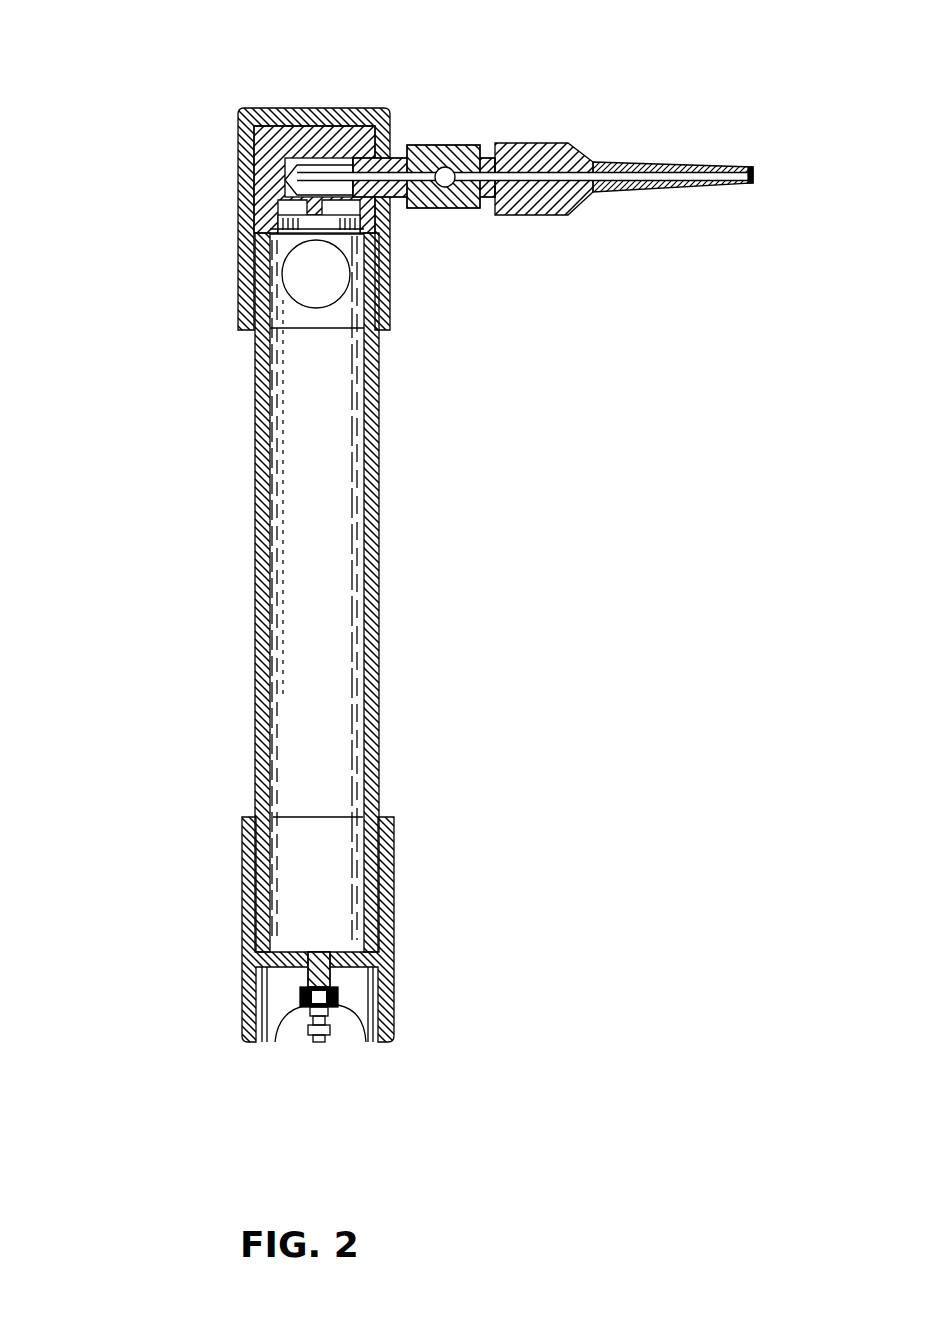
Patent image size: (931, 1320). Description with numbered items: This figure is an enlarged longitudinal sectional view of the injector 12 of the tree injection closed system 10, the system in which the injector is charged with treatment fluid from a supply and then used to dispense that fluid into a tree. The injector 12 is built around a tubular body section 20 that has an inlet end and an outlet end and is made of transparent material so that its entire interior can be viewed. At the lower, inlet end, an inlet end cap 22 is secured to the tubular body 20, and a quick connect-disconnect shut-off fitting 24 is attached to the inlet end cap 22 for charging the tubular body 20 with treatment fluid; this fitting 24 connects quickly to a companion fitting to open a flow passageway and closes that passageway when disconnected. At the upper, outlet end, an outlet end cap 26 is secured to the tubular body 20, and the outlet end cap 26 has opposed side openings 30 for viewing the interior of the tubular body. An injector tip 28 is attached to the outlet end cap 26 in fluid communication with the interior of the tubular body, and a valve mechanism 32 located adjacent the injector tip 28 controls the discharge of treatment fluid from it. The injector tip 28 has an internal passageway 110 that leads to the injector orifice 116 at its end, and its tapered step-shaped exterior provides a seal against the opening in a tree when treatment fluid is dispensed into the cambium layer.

The tree injection closed system 10 is at (461, 598).
The injector 12 is at (396, 623).
The tubular body section 20 is at (255, 547).
The inlet end cap 22 is at (394, 885).
The quick connect-disconnect shut-off fitting 24 is at (307, 1007).
The outlet end cap 26 is at (238, 259).
The injector tip 28 is at (566, 141).
The opposed side openings 30 is at (294, 283).
The valve mechanism 32 is at (450, 168).
The internal passageway 110 is at (682, 166).
The injector orifice 116 is at (753, 175).